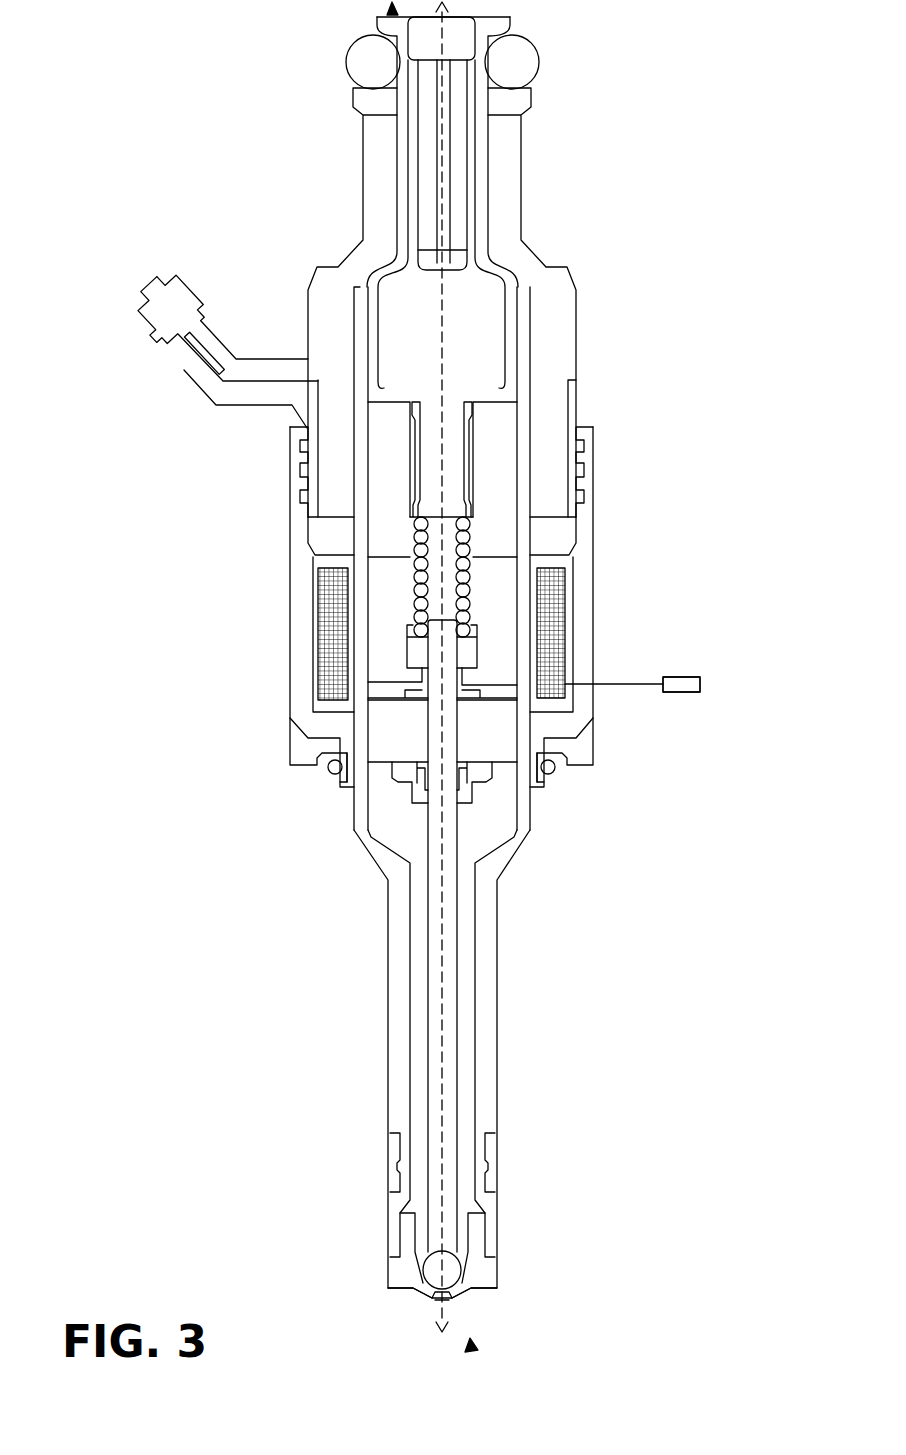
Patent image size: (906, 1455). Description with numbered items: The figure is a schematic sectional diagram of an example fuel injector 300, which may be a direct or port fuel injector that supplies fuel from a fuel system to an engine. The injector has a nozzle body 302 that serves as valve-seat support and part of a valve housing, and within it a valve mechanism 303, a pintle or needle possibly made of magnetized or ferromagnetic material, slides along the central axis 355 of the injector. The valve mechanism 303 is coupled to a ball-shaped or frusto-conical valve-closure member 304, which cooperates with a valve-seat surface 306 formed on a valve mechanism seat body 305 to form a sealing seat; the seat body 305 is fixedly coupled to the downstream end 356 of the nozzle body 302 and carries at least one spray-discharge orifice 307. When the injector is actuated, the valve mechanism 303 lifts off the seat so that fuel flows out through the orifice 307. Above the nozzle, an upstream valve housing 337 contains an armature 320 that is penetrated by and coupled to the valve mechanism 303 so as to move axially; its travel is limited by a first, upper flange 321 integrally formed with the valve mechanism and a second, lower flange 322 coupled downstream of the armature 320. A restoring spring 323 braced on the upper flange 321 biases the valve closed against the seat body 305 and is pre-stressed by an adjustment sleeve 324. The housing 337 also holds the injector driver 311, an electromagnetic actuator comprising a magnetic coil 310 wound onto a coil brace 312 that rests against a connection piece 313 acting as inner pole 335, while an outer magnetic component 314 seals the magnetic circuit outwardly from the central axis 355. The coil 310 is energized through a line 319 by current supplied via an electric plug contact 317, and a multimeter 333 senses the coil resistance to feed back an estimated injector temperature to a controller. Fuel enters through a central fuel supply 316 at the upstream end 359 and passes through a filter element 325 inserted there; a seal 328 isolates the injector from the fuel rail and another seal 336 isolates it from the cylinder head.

The fuel injector 300 is at (688, 212).
The nozzle body 302 is at (488, 1035).
The valve mechanism 303 is at (456, 975).
The valve-closure member 304 is at (450, 1265).
The valve mechanism seat body 305 is at (395, 1280).
The valve-seat surface 306 is at (423, 1283).
The spray-discharge orifice 307 is at (448, 1300).
The magnetic coil 310 is at (550, 612).
The injector driver 311 is at (578, 626).
The coil brace 312 is at (560, 562).
The connection piece 313 is at (500, 425).
The outer magnetic component 314 is at (583, 670).
The central fuel supply 316 is at (458, 18).
The electric plug contact 317 is at (215, 338).
The connector lead 319 is at (265, 382).
The armature 320 is at (342, 740).
The first upper flange 321 is at (382, 733).
The second lower flange 322 is at (395, 778).
The restoring spring 323 is at (415, 612).
The adjustment sleeve 324 is at (466, 410).
The filter element 325 is at (460, 152).
The seal 328 is at (525, 50).
The multimeter 333 is at (700, 678).
The inner pole 335 is at (402, 557).
The seal 336 is at (492, 1145).
The upstream valve housing 337 is at (608, 506).
The central axis 355 is at (435, 1312).
The downstream end 356 is at (478, 1350).
The upstream end 359 is at (388, 8).